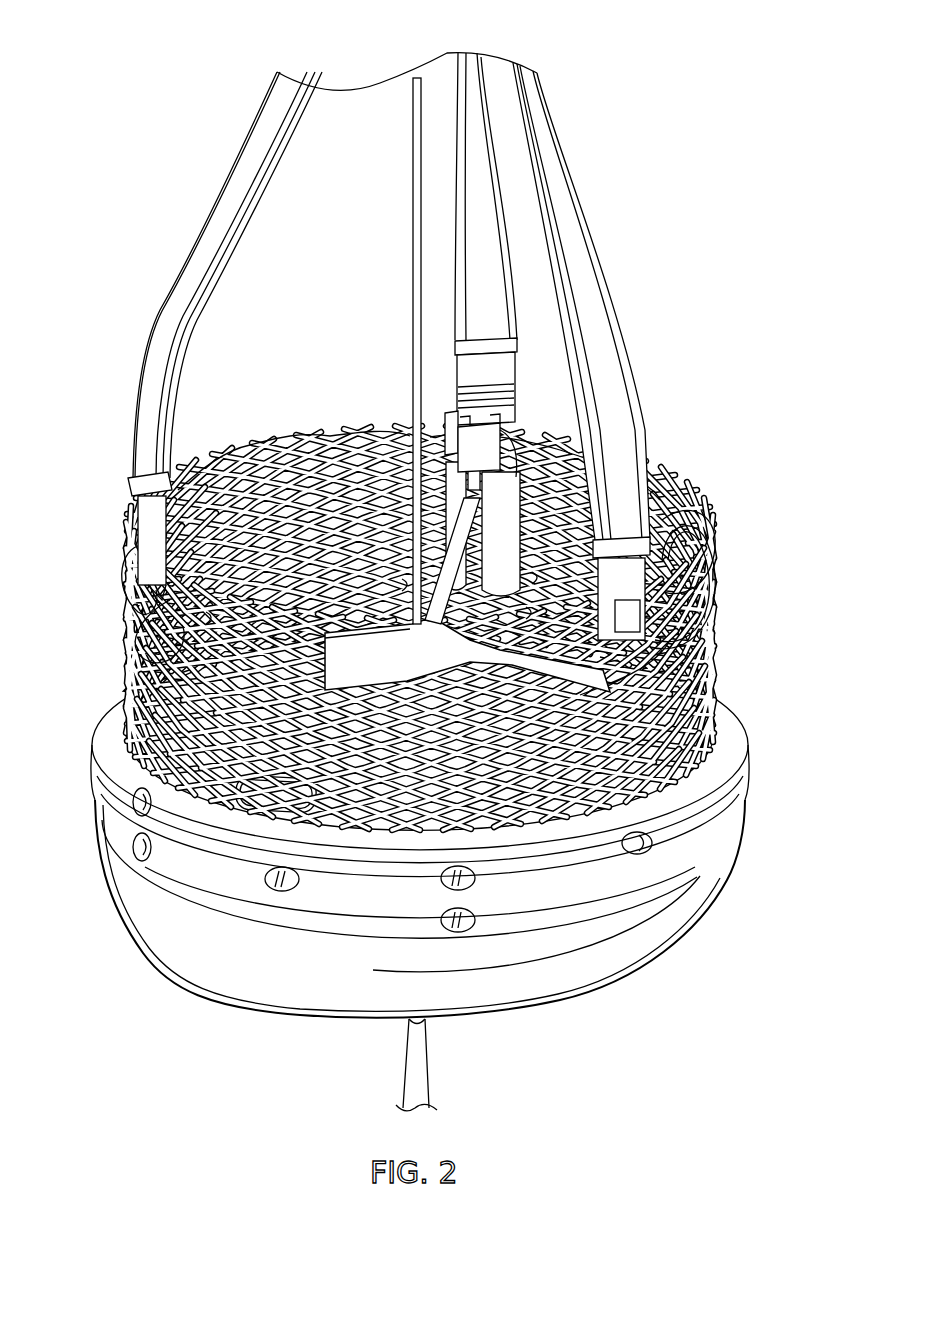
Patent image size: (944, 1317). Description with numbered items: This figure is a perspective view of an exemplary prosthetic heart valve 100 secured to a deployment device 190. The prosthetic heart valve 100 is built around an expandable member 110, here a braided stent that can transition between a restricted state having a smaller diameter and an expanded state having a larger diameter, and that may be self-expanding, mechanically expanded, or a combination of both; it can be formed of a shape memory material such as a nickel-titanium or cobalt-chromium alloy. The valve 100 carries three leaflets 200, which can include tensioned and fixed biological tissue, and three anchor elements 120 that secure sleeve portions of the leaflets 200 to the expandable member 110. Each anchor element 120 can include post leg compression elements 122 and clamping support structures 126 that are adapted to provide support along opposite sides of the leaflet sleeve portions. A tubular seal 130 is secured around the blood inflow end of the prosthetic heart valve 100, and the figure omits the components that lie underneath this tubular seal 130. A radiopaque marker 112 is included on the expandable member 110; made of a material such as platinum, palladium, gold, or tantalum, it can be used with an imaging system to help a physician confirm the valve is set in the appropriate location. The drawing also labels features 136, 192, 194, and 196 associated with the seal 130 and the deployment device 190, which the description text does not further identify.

The prosthetic heart valve 100 is at (150, 45).
The expandable member 110 is at (712, 525).
The radiopaque marker 112 is at (245, 882).
The anchor element 120 is at (452, 435).
The post leg compression element 122 is at (465, 497).
The clamping support structure 126 is at (690, 650).
The tubular seal 130 is at (182, 975).
The port 136 is at (266, 877).
The deployment device 190 is at (232, 103).
The arm 192 is at (232, 190).
The central rod 194 is at (410, 207).
The shaft 196 is at (422, 1082).
The leaflet 200 is at (237, 787).